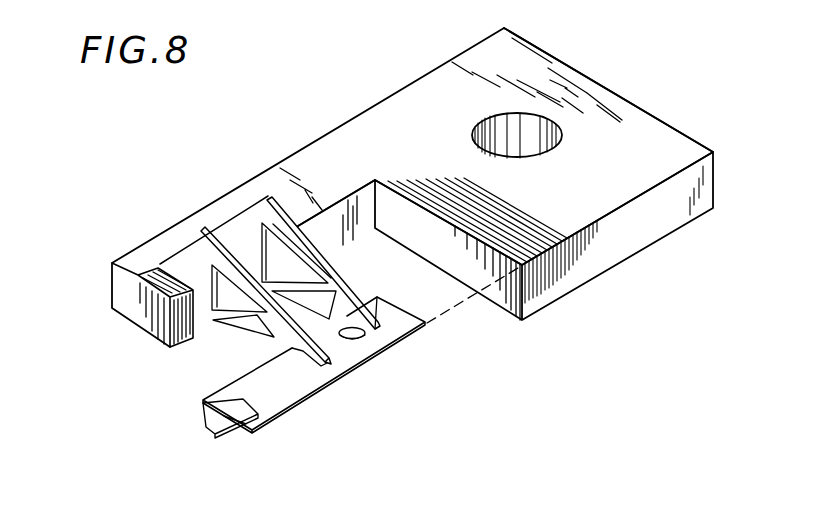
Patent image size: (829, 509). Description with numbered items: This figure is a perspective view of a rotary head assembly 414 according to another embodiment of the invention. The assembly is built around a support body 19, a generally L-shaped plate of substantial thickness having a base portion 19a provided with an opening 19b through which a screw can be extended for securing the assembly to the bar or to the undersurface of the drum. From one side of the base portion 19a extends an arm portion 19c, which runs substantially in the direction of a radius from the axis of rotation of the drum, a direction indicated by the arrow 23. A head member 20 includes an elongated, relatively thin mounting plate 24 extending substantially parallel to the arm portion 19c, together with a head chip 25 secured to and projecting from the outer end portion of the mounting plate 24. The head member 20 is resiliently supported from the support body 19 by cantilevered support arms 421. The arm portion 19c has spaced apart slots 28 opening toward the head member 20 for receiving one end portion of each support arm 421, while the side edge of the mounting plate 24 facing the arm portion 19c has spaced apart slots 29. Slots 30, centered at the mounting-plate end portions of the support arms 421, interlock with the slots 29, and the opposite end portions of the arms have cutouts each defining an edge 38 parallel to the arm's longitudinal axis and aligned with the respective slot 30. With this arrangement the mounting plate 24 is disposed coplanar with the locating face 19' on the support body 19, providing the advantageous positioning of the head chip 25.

The support body 19 is at (412, 187).
The locating face 19' is at (451, 124).
The base portion 19a is at (754, 134).
The opening 19b is at (553, 122).
The arm portion 19c is at (302, 188).
The edge 38 is at (111, 288).
The slots 28 is at (203, 325).
The cantilevered support arms 421 is at (237, 343).
The slots 29 is at (363, 300).
The slots 30 is at (360, 344).
The mounting plate 24 is at (363, 363).
The head chip 25 is at (229, 436).
The head member 20 is at (310, 405).
The arrow 23 is at (160, 372).
The rotary head assembly 414 is at (610, 276).